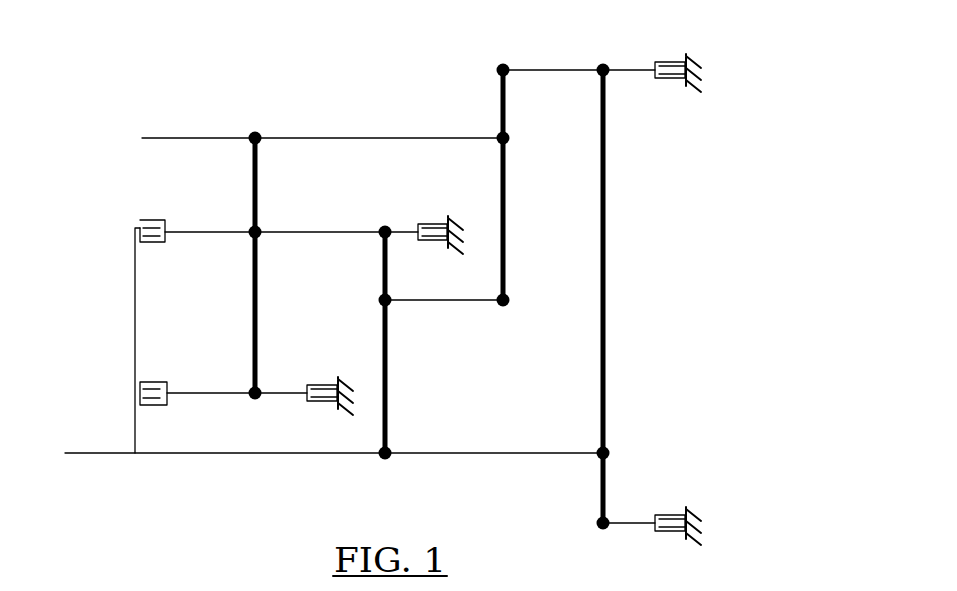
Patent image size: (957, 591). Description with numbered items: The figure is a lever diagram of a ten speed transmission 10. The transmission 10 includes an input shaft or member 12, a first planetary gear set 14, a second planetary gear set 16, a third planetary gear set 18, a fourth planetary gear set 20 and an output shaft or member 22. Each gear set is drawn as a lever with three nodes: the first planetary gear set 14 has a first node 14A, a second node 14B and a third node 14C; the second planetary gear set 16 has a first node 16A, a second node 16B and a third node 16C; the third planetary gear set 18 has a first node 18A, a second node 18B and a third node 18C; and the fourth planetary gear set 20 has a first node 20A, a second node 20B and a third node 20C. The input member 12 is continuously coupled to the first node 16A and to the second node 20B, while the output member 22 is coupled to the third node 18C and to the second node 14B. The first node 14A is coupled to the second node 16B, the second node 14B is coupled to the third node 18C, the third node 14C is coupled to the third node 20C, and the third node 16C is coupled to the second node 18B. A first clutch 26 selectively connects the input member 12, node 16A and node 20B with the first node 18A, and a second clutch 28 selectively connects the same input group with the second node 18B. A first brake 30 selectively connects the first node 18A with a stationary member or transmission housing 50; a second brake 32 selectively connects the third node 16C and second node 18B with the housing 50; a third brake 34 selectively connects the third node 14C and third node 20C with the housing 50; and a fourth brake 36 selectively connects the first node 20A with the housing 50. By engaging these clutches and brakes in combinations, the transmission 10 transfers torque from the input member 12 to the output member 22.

The transmission 10 is at (722, 57).
The input shaft or member 12 is at (80, 455).
The first planetary gear set 14 is at (499, 66).
The first node of the first planetary gear set 14A is at (500, 306).
The second node of the first planetary gear set 14B is at (508, 138).
The third node of the first planetary gear set 14C is at (504, 66).
The second planetary gear set 16 is at (394, 218).
The first node of the second planetary gear set 16A is at (385, 458).
The second node of the second planetary gear set 16B is at (378, 301).
The third node of the second planetary gear set 16C is at (381, 226).
The third planetary gear set 18 is at (248, 131).
The first node of the third planetary gear set 18A is at (255, 399).
The second node of the third planetary gear set 18B is at (262, 228).
The third node of the third planetary gear set 18C is at (258, 132).
The fourth planetary gear set 20 is at (610, 60).
The first node of the fourth planetary gear set 20A is at (598, 523).
The second node of the fourth planetary gear set 20B is at (608, 452).
The third node of the fourth planetary gear set 20C is at (600, 67).
The output shaft or member 22 is at (180, 141).
The first clutch 26 is at (152, 382).
The second clutch 28 is at (152, 218).
The first brake 30 is at (320, 384).
The second brake 32 is at (428, 242).
The third brake 34 is at (665, 80).
The fourth brake 36 is at (668, 533).
The stationary member or transmission housing 50 is at (344, 412).